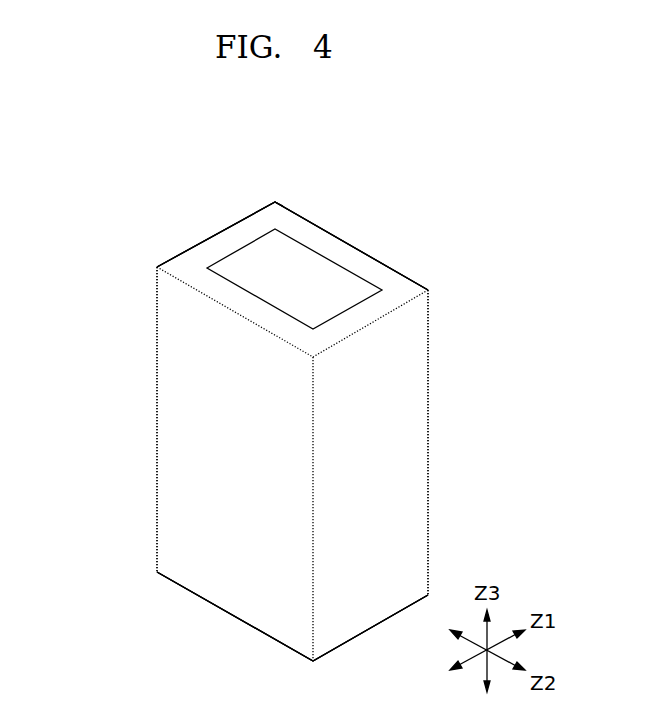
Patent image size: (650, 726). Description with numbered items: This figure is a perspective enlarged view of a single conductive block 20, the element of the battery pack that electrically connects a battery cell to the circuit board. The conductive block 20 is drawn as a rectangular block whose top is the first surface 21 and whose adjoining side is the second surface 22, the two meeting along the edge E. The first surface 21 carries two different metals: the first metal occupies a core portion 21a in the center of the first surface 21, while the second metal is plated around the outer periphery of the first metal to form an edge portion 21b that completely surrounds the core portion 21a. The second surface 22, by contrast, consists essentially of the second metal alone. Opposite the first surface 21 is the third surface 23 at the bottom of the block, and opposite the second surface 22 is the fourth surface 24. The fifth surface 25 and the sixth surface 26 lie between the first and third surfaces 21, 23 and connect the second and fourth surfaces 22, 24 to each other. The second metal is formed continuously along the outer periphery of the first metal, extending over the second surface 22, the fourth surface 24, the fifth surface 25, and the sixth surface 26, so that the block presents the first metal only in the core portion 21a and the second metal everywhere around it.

The conductive block 20 is at (157, 201).
The first surface 21 is at (490, 218).
The core portion 21a is at (312, 270).
The edge portion 21b is at (402, 288).
The second surface 22 is at (430, 430).
The third surface 23 is at (192, 592).
The fourth surface 24 is at (217, 482).
The fifth surface 25 is at (395, 492).
The sixth surface 26 is at (158, 398).
The edge E is at (287, 203).